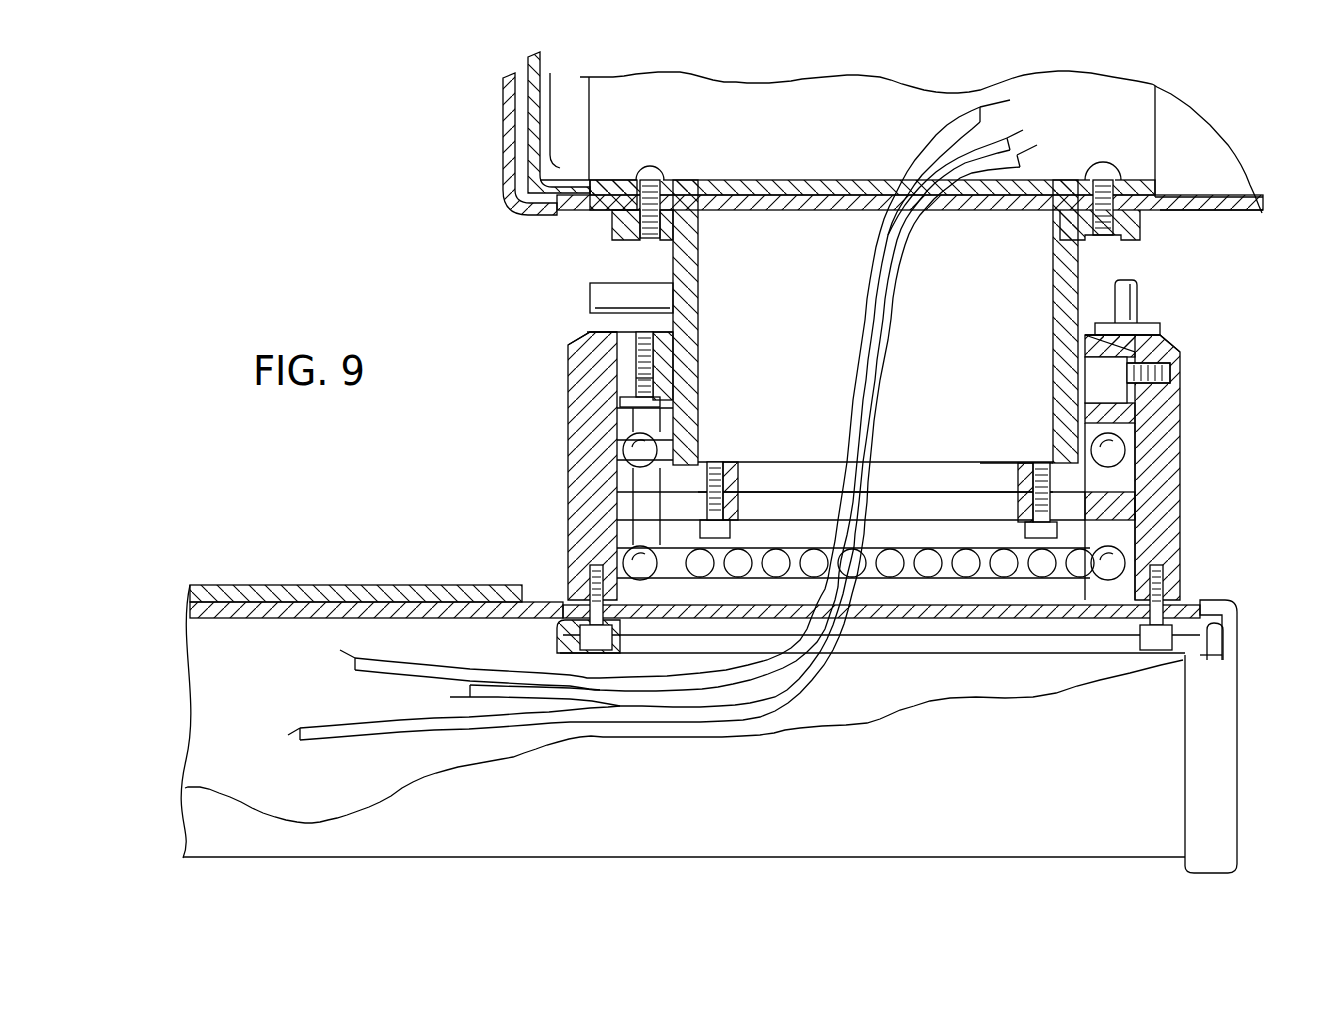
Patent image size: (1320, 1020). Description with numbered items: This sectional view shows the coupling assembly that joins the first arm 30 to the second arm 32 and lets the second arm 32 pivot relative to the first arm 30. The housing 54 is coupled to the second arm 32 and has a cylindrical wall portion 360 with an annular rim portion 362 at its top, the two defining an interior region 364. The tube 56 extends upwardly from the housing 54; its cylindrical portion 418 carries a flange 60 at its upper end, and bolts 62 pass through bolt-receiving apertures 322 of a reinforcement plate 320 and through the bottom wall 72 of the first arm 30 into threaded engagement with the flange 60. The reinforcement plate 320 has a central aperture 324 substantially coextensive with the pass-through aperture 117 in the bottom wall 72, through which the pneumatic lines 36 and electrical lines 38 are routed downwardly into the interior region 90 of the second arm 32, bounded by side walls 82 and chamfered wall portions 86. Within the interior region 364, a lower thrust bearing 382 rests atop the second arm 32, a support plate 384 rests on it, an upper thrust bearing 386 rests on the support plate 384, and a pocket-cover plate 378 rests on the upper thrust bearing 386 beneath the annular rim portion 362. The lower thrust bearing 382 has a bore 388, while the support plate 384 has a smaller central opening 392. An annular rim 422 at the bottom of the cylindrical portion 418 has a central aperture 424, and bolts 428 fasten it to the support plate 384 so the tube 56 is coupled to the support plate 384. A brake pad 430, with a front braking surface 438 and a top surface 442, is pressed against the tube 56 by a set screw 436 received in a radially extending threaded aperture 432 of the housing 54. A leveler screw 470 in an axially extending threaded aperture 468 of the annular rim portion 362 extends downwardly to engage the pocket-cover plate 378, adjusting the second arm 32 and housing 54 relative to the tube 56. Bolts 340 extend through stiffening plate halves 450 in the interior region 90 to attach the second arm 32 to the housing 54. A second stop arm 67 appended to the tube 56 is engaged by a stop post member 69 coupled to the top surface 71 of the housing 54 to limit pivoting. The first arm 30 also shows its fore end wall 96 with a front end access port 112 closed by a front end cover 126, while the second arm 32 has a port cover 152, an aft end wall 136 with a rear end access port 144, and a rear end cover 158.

The first arm 30 is at (1203, 82).
The second arm 32 is at (236, 557).
The pneumatic lines 36 is at (948, 120).
The electrical lines 38 is at (998, 135).
The housing 54 is at (560, 462).
The tube 56 is at (1100, 261).
The flange 60 is at (620, 226).
The bolts 62 is at (658, 170).
The second stop arm 67 is at (617, 281).
The second stop post member 69 is at (1130, 302).
The top surface 71 is at (598, 330).
The bottom wall 72 is at (1180, 205).
The side walls 82 is at (212, 636).
The chamfered wall portions 86 is at (202, 806).
The interior region 90 is at (228, 688).
The fore end wall 96 is at (553, 97).
The front end access port 112 is at (555, 126).
The pass-through aperture 117 is at (811, 199).
The front end cover 126 is at (503, 118).
The aft end wall 136 is at (1222, 638).
The rear end access port 144 is at (1216, 660).
The fourth port cover 152 is at (358, 585).
The rear end cover 158 is at (1222, 758).
The reinforcement plate 320 is at (612, 186).
The bolt-receiving apertures 322 is at (655, 178).
The central aperture 324 is at (757, 186).
The bolts 340 is at (615, 645).
The cylindrical wall portion 360 is at (1165, 498).
The annular rim portion 362 is at (667, 367).
The interior region 364 is at (815, 450).
The pocket-cover plate 378 is at (614, 406).
The lower thrust bearing 382 is at (620, 555).
The support plate 384 is at (622, 505).
The upper thrust bearing 386 is at (622, 449).
The bore 388 is at (769, 555).
The central opening 392 is at (879, 514).
The cylindrical portion 418 is at (686, 260).
The annular rim 422 is at (1030, 466).
The central aperture 424 is at (917, 483).
The bolts 428 is at (713, 462).
The brake pads 430 is at (1094, 381).
The threaded apertures 432 is at (1172, 376).
The set screws 436 is at (1172, 383).
The front braking surface 438 is at (1080, 358).
The top surface 442 is at (1115, 350).
The stiffening plate halves 450 is at (1092, 632).
The threaded apertures 468 is at (640, 388).
The leveler screws 470 is at (640, 370).